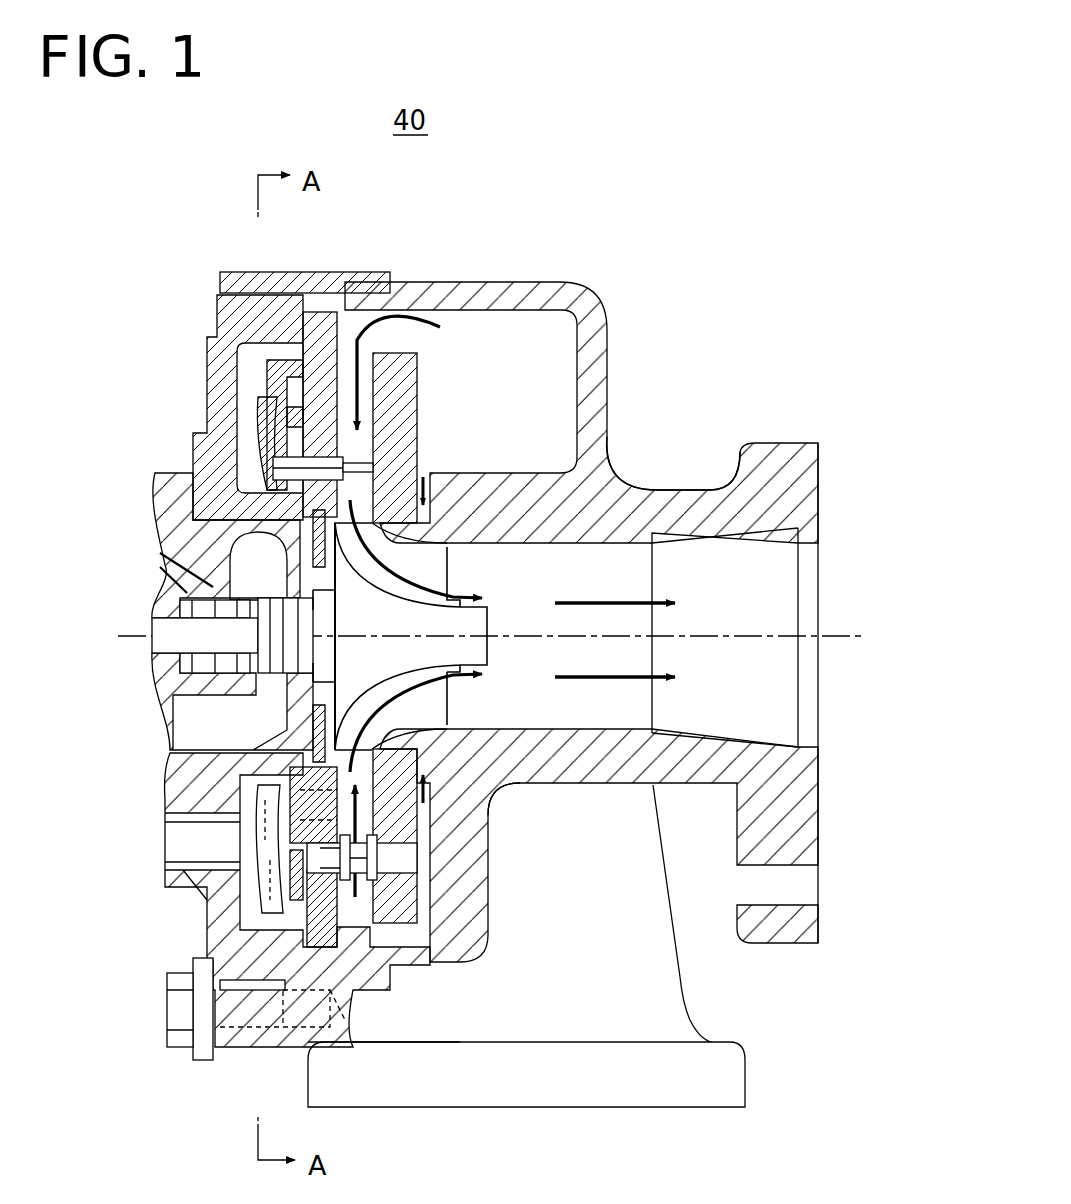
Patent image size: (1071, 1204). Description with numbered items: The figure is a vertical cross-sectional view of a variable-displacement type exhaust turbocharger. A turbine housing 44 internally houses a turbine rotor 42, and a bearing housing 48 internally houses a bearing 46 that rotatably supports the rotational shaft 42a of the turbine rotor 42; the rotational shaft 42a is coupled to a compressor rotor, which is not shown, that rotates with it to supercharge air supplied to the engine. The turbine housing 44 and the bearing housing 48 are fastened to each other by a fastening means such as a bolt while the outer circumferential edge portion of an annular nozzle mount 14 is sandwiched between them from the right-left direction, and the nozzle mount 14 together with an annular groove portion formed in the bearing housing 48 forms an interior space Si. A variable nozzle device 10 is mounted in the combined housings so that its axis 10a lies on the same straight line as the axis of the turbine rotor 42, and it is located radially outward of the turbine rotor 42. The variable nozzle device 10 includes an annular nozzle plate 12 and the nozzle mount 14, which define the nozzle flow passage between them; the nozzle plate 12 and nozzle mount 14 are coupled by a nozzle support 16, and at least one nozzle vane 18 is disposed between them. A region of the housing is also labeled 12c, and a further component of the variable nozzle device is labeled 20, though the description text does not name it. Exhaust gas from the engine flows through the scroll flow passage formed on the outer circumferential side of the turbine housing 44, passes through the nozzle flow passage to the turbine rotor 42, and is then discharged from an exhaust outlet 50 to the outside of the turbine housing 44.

The variable nozzle device 10 is at (250, 392).
The axis 10a is at (847, 636).
The nozzle plate 12 is at (477, 283).
The housing cavity 12c is at (433, 740).
The nozzle mount 14 is at (347, 280).
The nozzle support 16 is at (400, 897).
The nozzle vane 18 is at (380, 448).
The variable nozzle mechanism 20 is at (258, 417).
The turbine rotor 42 is at (445, 560).
The rotational shaft 42a is at (170, 650).
The turbine housing 44 is at (608, 416).
The bearing 46 is at (190, 600).
The bearing housing 48 is at (163, 510).
The exhaust outlet 50 is at (780, 557).